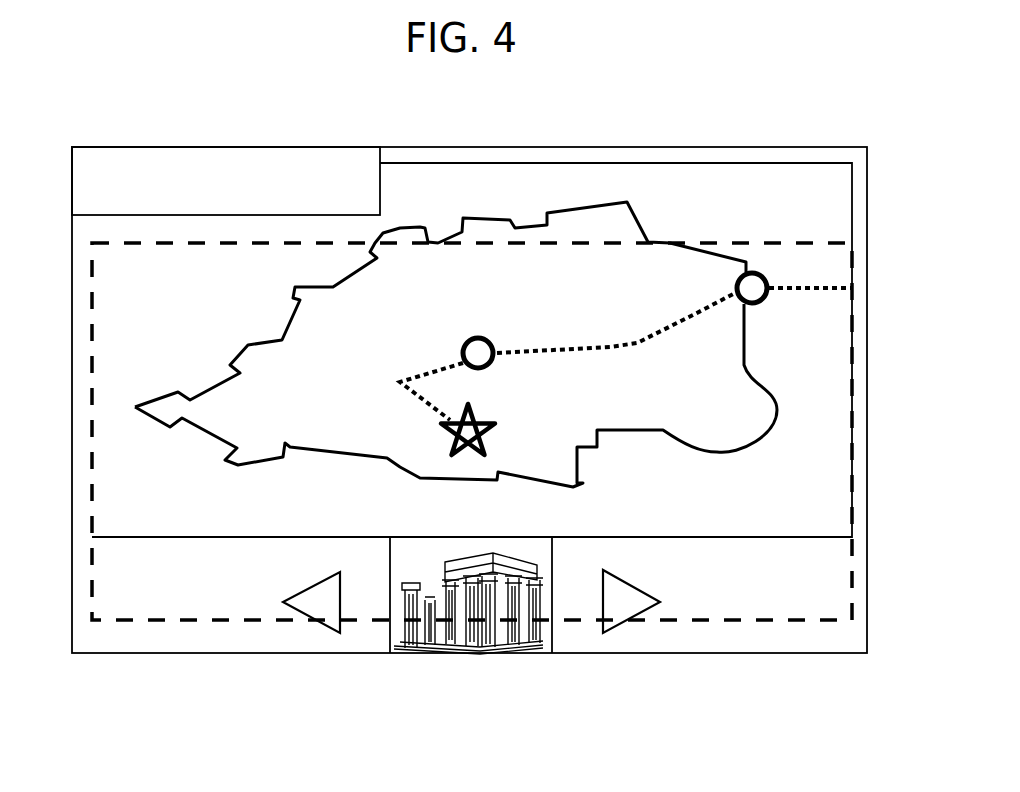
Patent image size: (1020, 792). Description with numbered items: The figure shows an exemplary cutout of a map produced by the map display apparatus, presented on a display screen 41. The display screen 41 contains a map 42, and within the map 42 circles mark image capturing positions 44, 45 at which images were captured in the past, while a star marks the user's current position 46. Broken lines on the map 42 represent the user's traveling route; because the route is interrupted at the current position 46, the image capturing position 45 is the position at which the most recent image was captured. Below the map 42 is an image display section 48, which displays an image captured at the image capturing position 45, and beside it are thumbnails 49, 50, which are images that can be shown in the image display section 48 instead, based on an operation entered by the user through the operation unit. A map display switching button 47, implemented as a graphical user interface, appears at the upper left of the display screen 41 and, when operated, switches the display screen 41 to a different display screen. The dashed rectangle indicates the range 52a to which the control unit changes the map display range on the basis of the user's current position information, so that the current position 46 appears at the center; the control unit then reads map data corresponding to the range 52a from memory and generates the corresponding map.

The display screen 41 is at (748, 147).
The map 42 is at (853, 378).
The image capturing position 44 is at (752, 271).
The image capturing position 45 is at (484, 337).
The current position 46 is at (500, 420).
The map display switching button 47 is at (264, 148).
The image display section 48 is at (518, 653).
The thumbnail 49 is at (660, 597).
The thumbnail 50 is at (330, 632).
The range 52a is at (853, 565).